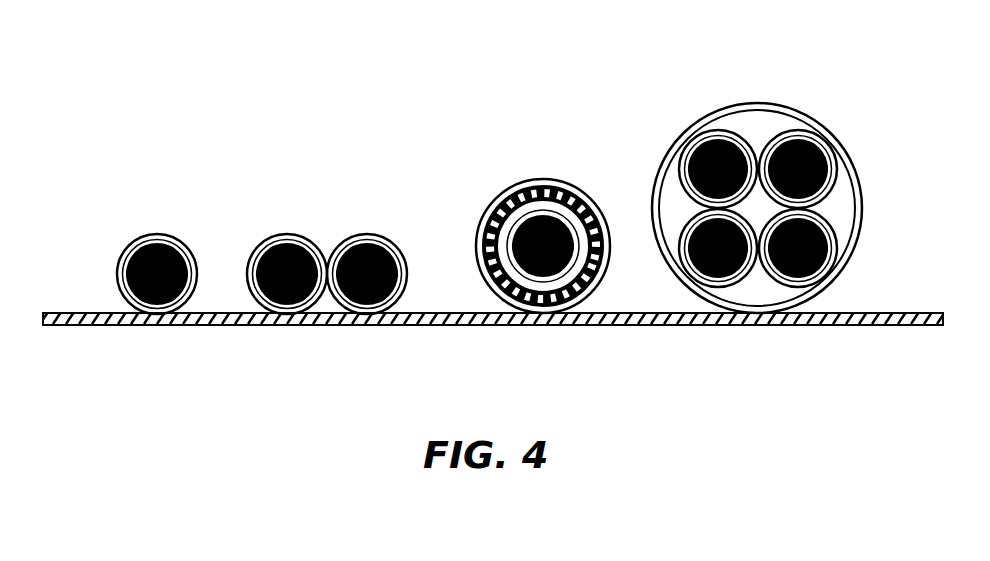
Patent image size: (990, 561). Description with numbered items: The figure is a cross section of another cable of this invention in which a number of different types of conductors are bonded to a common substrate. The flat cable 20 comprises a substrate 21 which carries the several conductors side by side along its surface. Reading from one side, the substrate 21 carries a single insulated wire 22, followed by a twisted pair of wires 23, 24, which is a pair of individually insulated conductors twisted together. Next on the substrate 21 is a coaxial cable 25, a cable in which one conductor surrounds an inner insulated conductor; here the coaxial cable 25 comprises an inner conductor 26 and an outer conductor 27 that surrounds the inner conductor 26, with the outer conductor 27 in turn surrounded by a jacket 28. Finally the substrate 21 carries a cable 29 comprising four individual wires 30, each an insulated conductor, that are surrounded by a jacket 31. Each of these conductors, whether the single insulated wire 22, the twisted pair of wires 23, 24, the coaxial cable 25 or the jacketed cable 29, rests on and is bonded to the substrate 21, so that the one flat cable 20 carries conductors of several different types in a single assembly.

The flat cable 20 is at (320, 371).
The substrate 21 is at (874, 325).
The insulated wire 22 is at (133, 245).
The twisted pair wire 23 is at (263, 243).
The twisted pair wire 24 is at (384, 237).
The coaxial cable 25 is at (457, 161).
The inner conductor 26 is at (535, 214).
The outer conductor 27 is at (556, 180).
The jacket 28 is at (583, 185).
The cable 29 is at (855, 125).
The individual wires 30 is at (728, 131).
The jacket 31 is at (862, 198).